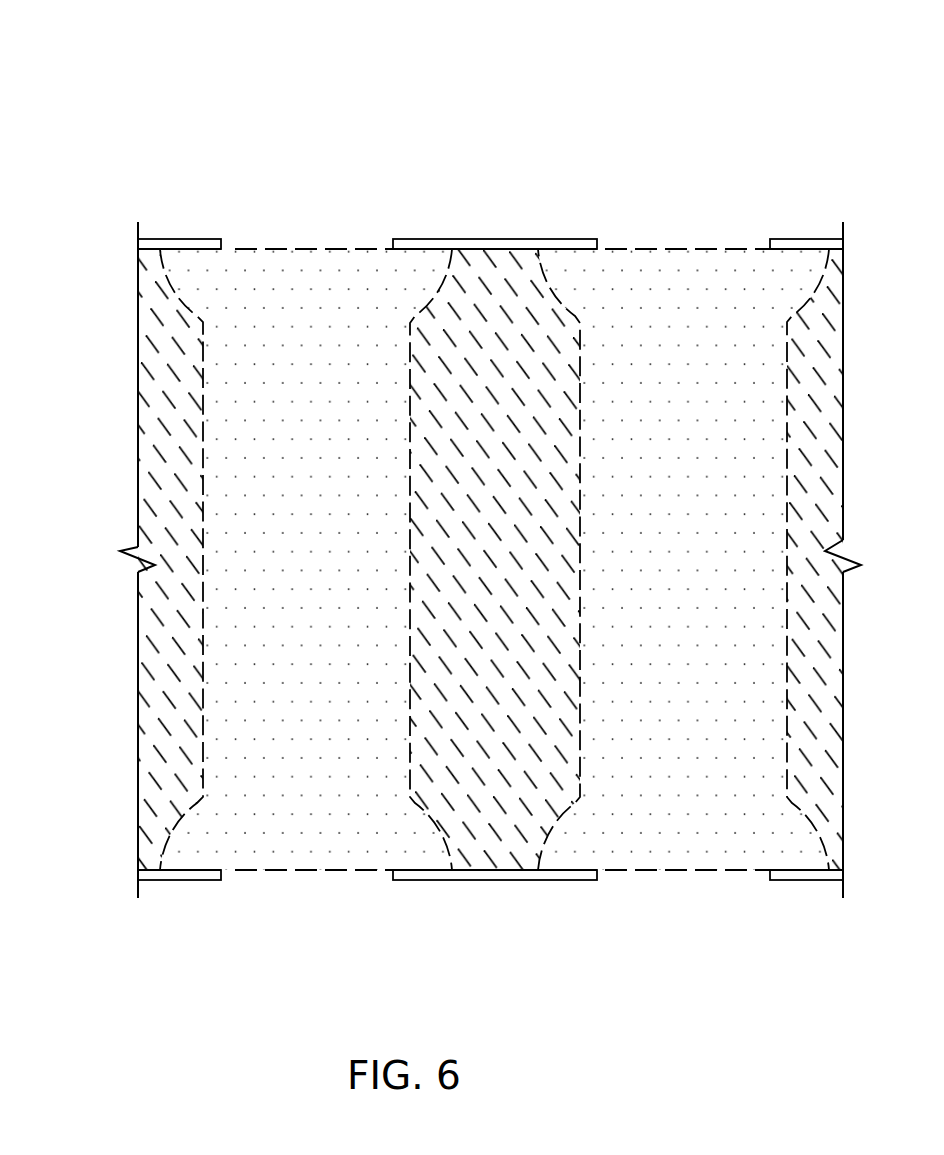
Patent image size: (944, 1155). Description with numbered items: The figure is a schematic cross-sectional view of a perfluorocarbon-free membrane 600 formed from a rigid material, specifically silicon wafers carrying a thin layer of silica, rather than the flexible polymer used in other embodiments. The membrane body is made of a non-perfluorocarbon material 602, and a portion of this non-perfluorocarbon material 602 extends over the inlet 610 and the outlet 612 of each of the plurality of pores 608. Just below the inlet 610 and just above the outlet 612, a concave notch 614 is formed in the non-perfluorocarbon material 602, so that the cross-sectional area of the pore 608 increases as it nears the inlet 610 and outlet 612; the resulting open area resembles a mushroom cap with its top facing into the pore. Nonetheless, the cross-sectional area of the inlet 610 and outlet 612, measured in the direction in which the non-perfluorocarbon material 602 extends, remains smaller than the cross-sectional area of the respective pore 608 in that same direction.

The perfluorocarbon-free membrane 600 is at (760, 58).
The non-perfluorocarbon material 602 is at (168, 517).
The pore 608 is at (228, 418).
The inlet 610 is at (336, 248).
The outlet 612 is at (332, 870).
The concave notch 614 is at (437, 302).